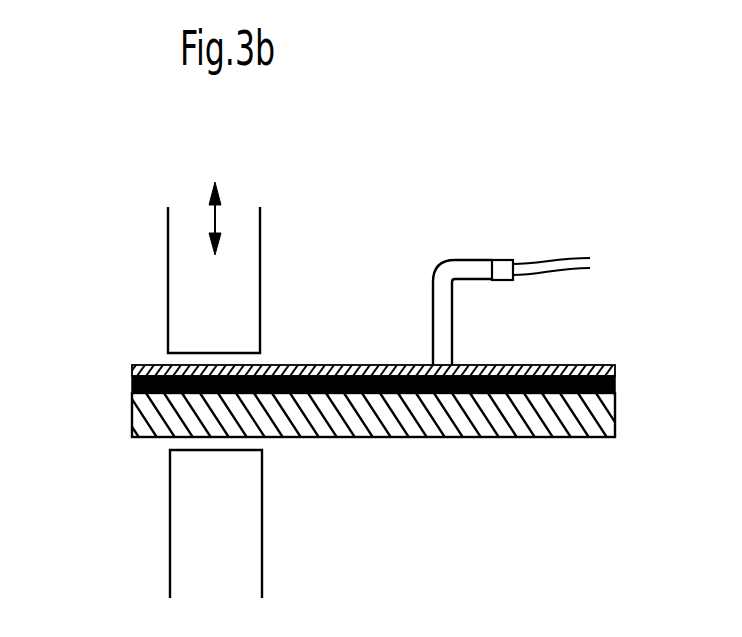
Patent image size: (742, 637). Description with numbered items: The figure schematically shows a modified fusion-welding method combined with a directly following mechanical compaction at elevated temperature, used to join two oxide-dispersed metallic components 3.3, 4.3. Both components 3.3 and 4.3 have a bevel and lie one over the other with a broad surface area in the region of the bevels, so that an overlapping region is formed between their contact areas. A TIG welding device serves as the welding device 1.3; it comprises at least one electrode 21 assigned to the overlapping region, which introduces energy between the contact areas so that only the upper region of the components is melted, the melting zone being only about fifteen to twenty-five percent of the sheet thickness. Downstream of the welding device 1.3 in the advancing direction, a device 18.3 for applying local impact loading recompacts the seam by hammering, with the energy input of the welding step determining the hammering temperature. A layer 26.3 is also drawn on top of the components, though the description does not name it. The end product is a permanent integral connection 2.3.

The welding device 1.3 is at (511, 260).
The permanent integral connection 2.3 is at (380, 325).
The component 3.3 is at (610, 367).
The component 4.3 is at (600, 410).
The device for applying local impact loading 18.3 is at (238, 330).
The electrode 21 is at (443, 317).
The cover layer 26.3 is at (325, 367).